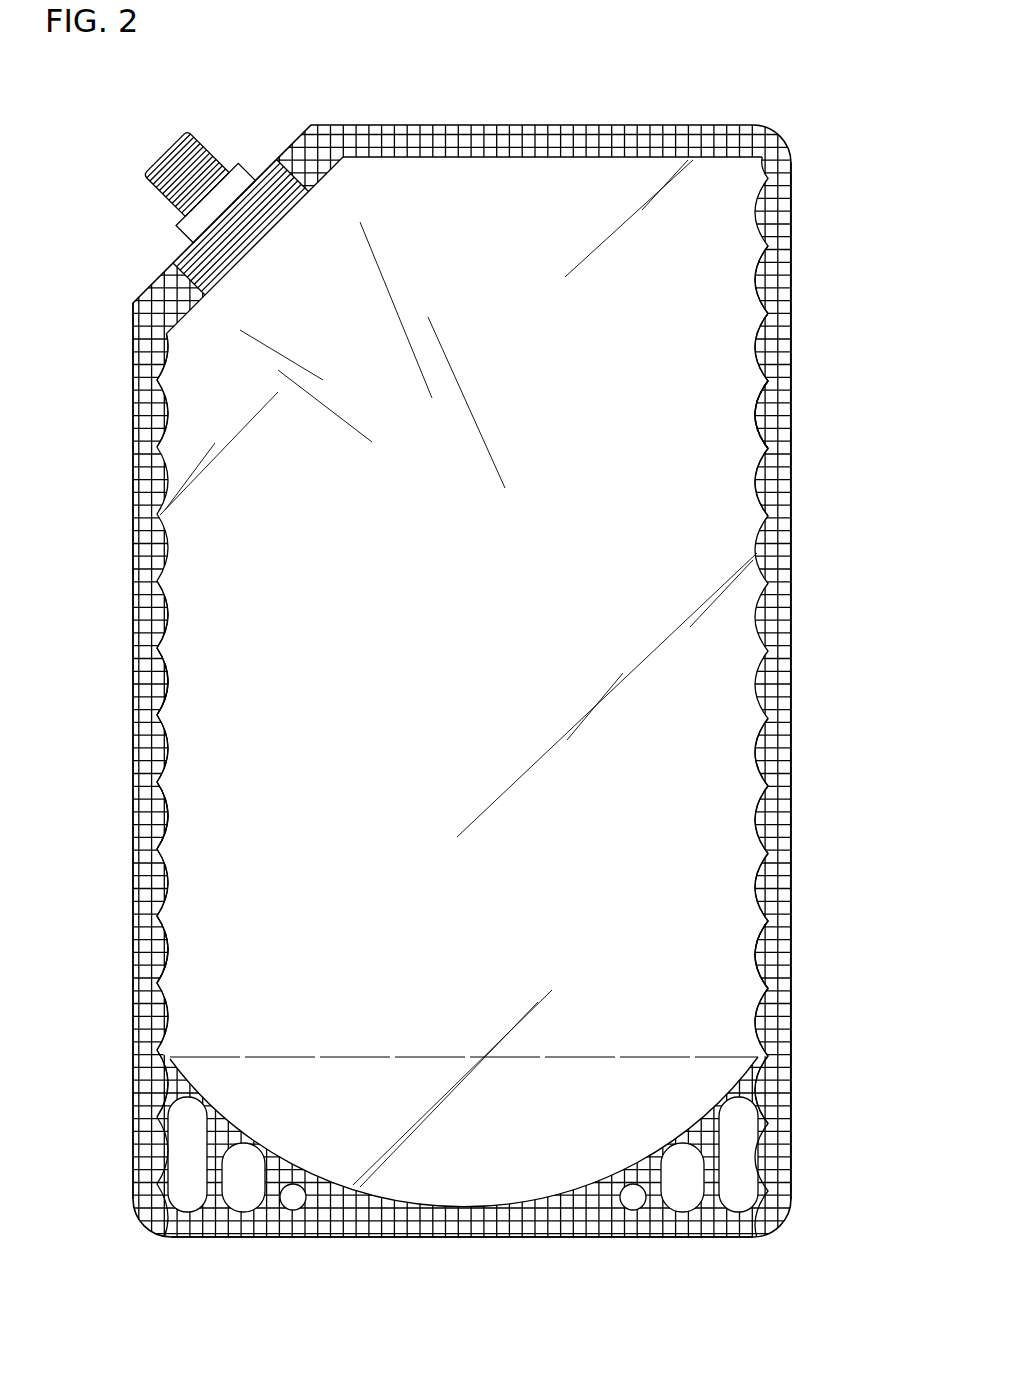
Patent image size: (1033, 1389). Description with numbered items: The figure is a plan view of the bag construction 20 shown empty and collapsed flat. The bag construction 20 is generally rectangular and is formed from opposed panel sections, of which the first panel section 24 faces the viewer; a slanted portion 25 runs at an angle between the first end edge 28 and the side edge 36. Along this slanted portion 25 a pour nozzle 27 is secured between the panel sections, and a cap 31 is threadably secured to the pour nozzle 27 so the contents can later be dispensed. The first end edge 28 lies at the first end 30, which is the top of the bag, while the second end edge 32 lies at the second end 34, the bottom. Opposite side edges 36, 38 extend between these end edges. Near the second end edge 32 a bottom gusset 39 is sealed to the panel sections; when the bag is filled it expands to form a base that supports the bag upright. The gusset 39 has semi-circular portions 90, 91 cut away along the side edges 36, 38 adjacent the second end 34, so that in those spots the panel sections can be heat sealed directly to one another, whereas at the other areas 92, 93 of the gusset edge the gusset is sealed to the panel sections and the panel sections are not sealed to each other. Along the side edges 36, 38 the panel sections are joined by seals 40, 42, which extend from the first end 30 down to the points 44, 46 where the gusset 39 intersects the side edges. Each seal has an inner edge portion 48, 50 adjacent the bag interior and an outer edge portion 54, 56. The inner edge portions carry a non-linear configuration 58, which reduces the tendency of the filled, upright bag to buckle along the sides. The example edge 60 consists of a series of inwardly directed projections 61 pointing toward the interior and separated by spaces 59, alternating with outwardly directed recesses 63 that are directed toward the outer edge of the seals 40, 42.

The bag construction 20 is at (764, 70).
The first panel section 24 is at (189, 852).
The slanted portion 25 is at (293, 142).
The pour nozzle 27 is at (175, 257).
The first end edge 28 is at (640, 127).
The first end 30 is at (489, 106).
The cap 31 is at (185, 133).
The second end edge 32 is at (604, 1240).
The second end 34 is at (317, 1252).
The side edge 36 is at (150, 642).
The side edge 38 is at (793, 700).
The bottom gusset 39 is at (703, 1055).
The first seal 40 is at (146, 476).
The second seal 42 is at (775, 485).
The point 44 is at (135, 1058).
The point 46 is at (793, 1057).
The inner edge portion 48 is at (194, 571).
The inner edge portion 50 is at (719, 469).
The outer edge portion 54 is at (148, 372).
The outer edge portion 56 is at (793, 560).
The non-linear configuration 58 is at (194, 631).
The spaces 59 is at (166, 782).
The edge 60 is at (171, 686).
The inwardly directed projections 61 is at (171, 748).
The outwardly directed recesses 63 is at (160, 377).
The semi-circular portion 90 is at (145, 1185).
The semi-circular portion 91 is at (782, 1178).
The area 92 is at (143, 1110).
The area 93 is at (778, 1117).